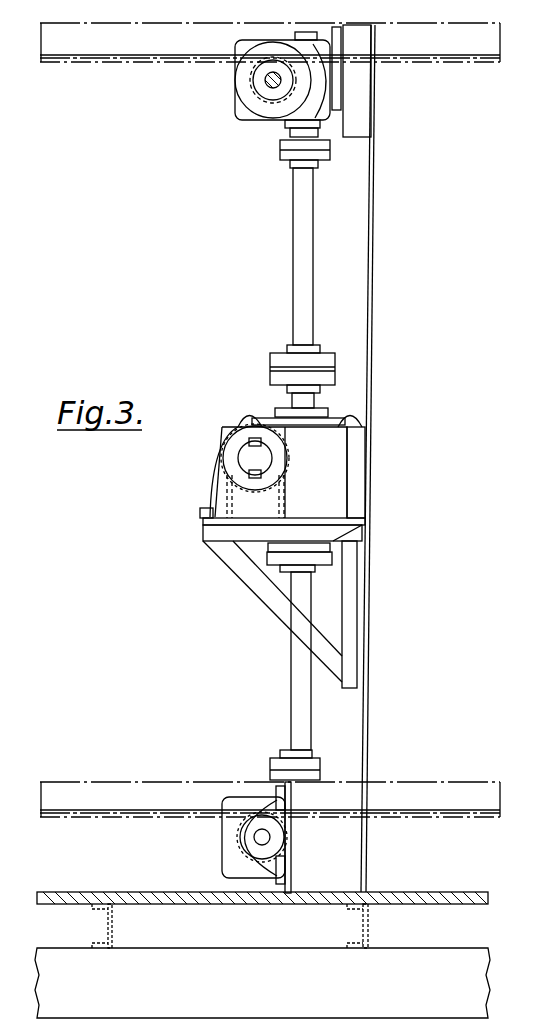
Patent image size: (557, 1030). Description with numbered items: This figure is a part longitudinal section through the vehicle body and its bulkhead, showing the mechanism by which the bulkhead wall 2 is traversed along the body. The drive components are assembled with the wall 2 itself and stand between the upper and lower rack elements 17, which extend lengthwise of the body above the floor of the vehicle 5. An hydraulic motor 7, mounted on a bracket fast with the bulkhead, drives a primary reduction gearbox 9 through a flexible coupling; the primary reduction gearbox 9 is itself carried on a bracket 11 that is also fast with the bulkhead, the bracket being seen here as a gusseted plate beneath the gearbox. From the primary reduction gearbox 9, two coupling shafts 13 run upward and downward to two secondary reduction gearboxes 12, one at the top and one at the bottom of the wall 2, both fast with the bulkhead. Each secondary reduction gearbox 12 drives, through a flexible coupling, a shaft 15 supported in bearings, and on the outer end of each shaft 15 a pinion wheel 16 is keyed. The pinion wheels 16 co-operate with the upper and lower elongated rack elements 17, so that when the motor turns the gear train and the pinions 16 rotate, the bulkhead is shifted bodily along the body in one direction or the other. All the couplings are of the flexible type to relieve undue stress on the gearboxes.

The bulkhead wall 2 is at (372, 268).
The floor of the vehicle 5 is at (462, 887).
The hydraulic motor 7 is at (279, 470).
The primary reduction gearbox 9 is at (208, 491).
The bracket 11 is at (279, 606).
The secondary reduction gearbox 12 is at (318, 100).
The coupling shaft 13 is at (293, 284).
The shaft 15 is at (266, 80).
The pinion wheel 16 is at (346, 71).
The rack element 17 is at (181, 43).